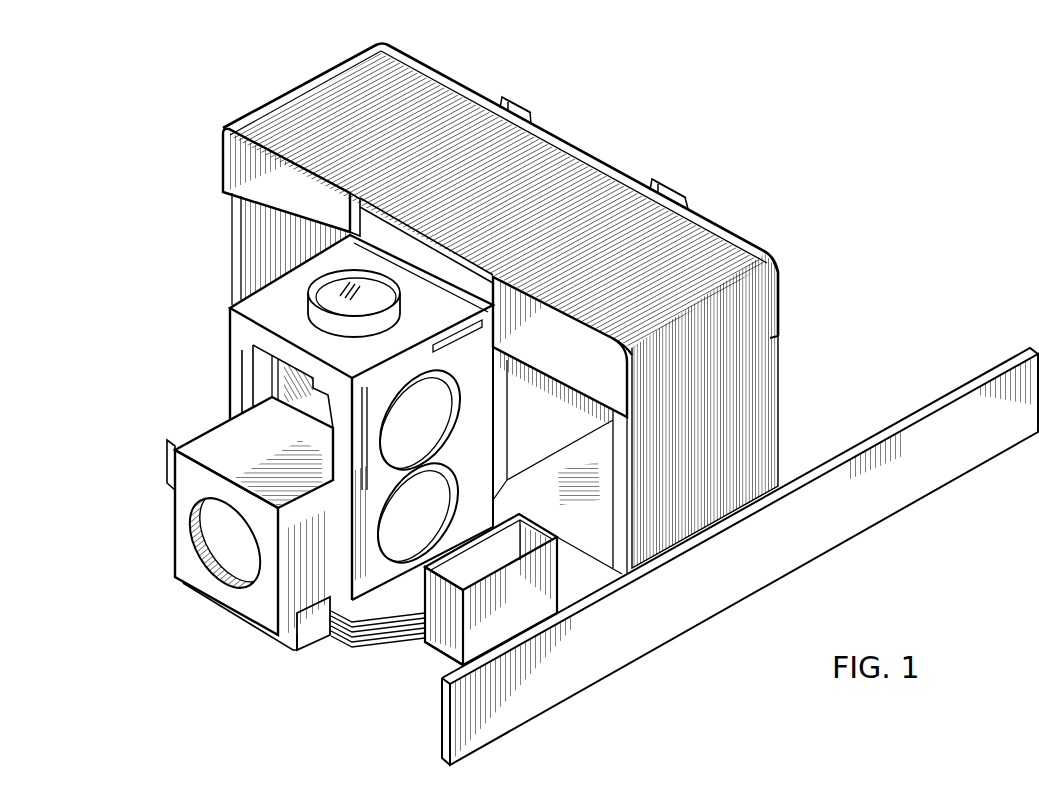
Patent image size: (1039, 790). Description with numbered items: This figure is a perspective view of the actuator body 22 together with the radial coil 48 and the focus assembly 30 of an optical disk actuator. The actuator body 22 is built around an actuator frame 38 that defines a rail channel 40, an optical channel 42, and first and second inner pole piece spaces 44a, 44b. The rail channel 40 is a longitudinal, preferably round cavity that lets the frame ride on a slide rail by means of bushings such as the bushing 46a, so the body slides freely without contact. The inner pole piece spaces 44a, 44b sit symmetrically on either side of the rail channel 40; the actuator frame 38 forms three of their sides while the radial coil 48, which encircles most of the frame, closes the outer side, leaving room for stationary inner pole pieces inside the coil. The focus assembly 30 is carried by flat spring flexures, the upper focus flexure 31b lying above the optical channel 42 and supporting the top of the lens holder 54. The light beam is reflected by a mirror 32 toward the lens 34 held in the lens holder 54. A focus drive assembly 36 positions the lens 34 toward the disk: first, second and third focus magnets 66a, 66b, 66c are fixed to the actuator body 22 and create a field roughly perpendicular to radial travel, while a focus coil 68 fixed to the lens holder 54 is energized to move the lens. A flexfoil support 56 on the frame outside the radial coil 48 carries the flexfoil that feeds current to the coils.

The actuator body 22 is at (200, 192).
The focus assembly 30 is at (180, 418).
The upper focus flexure 31b is at (588, 160).
The mirror 32 is at (310, 395).
The lens 34 is at (300, 290).
The focus drive assembly 36 is at (348, 709).
The actuator frame 38 is at (782, 315).
The rail channel 40 is at (230, 552).
The optical channel 42 is at (650, 172).
The first inner pole piece space 44a is at (538, 432).
The second inner pole piece space 44b is at (268, 233).
The bushing 46a is at (262, 604).
The radial coil 48 is at (297, 98).
The lens holder 54 is at (510, 617).
The flexfoil support 56 is at (920, 462).
The first focus magnet 66a is at (170, 480).
The second focus magnet 66b is at (310, 631).
The third focus magnet 66c is at (443, 648).
The focus coil 68 is at (350, 640).